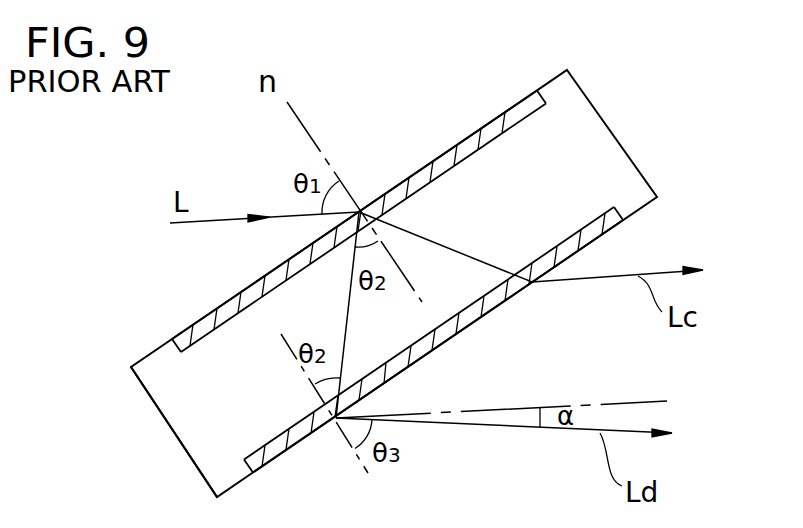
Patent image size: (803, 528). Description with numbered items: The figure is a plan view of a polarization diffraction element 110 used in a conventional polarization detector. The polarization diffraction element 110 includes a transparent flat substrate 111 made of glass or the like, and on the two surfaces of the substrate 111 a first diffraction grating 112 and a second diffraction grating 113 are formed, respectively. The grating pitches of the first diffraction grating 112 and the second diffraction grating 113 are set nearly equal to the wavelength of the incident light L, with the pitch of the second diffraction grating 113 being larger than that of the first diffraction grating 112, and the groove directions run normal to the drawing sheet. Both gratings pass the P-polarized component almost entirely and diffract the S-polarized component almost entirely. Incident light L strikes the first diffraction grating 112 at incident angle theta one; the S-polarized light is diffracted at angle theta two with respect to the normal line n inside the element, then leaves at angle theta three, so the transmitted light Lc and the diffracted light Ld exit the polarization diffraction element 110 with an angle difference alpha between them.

The polarization diffraction element 110 is at (606, 104).
The transparent flat substrate 111 is at (176, 450).
The first diffraction grating 112 is at (480, 128).
The second diffraction grating 113 is at (617, 226).